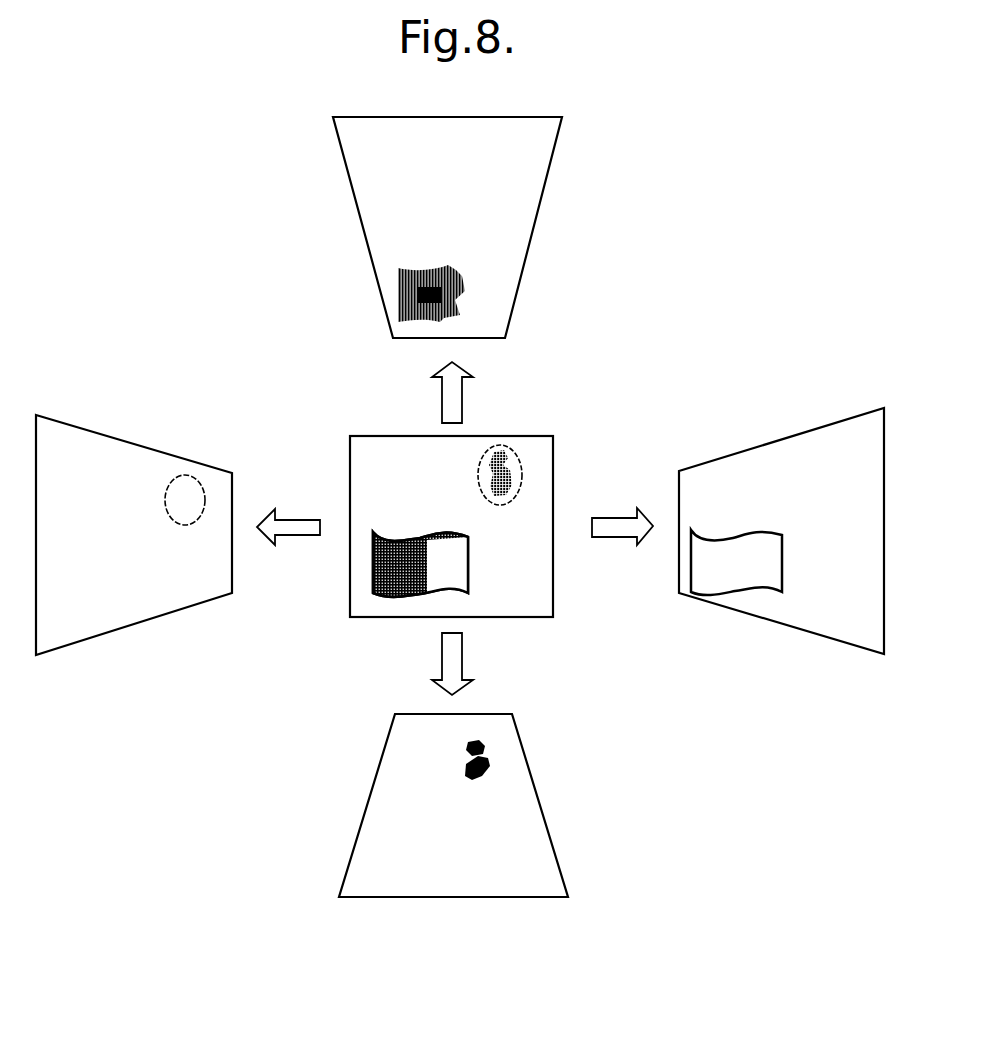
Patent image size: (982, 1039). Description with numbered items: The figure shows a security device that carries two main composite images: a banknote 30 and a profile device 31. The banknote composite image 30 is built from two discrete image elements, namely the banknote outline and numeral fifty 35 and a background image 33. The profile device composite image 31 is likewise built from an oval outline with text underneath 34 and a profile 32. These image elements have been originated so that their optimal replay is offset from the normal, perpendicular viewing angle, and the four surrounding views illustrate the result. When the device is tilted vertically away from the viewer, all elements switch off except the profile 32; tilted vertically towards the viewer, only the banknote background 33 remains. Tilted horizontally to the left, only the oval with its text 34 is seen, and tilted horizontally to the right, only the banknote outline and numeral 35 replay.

The banknote composite image 30 is at (373, 567).
The profile device composite image 31 is at (524, 470).
The profile 32 is at (486, 760).
The banknote background image 33 is at (398, 296).
The oval outline with text underneath 34 is at (188, 476).
The banknote outline and numeral 35 is at (708, 592).